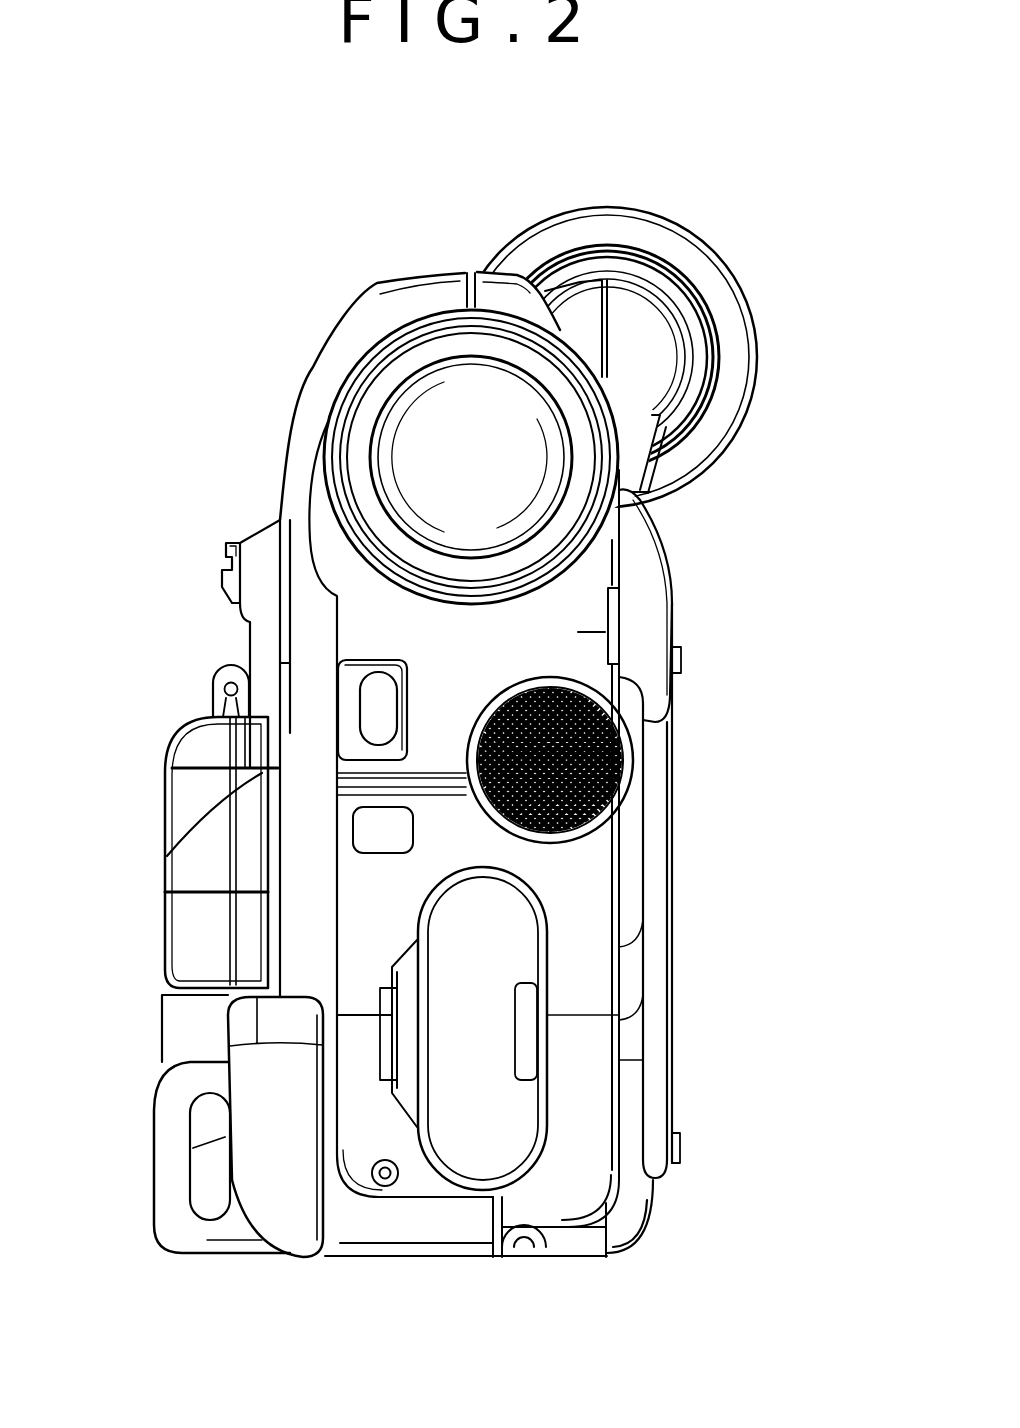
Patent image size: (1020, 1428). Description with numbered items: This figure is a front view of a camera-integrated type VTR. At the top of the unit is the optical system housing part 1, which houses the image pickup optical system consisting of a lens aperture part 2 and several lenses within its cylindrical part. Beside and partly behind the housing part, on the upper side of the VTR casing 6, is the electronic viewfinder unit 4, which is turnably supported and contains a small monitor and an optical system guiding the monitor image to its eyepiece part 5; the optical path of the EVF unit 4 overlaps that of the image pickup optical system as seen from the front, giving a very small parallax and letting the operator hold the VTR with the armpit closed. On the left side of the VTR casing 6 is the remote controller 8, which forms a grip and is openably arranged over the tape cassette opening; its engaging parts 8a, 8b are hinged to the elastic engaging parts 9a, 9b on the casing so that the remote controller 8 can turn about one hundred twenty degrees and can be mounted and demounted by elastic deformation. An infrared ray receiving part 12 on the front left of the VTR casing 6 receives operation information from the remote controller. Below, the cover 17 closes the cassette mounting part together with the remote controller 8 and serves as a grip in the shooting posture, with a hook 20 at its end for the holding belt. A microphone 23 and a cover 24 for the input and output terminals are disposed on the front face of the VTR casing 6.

The optical system housing part 1 is at (438, 243).
The lens aperture part 2 is at (423, 443).
The electronic viewfinder (EVF) unit 4 is at (667, 360).
The eyepiece part 5 is at (710, 457).
The VTR casing 6 is at (697, 907).
The remote controller 8 is at (198, 790).
The engaging part 8a is at (156, 673).
The engaging part 8b is at (212, 675).
The engaging part 9a is at (176, 605).
The engaging part 9b is at (235, 667).
The infrared ray receiving part 12 is at (387, 715).
The cover 17 is at (292, 1205).
The hook 20 is at (160, 1157).
The microphone 23 is at (627, 752).
The cover for input and output terminals 24 is at (510, 1117).